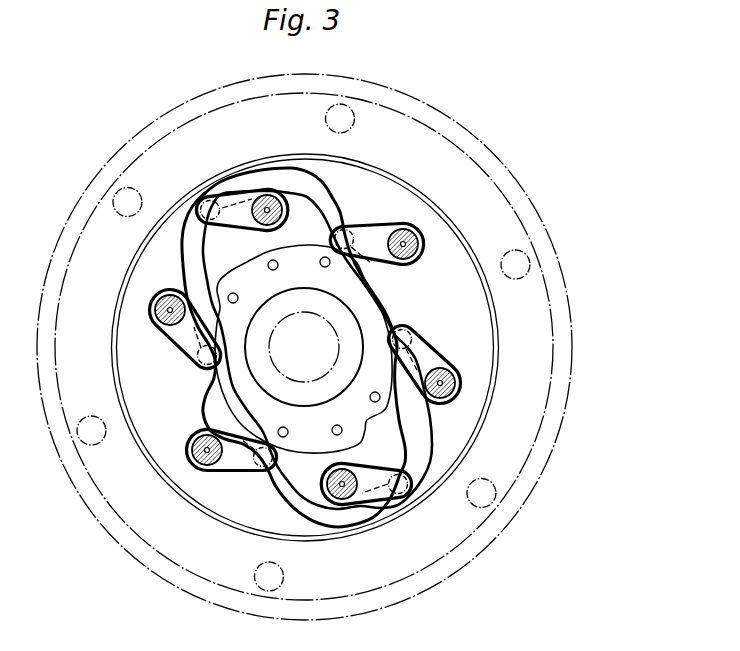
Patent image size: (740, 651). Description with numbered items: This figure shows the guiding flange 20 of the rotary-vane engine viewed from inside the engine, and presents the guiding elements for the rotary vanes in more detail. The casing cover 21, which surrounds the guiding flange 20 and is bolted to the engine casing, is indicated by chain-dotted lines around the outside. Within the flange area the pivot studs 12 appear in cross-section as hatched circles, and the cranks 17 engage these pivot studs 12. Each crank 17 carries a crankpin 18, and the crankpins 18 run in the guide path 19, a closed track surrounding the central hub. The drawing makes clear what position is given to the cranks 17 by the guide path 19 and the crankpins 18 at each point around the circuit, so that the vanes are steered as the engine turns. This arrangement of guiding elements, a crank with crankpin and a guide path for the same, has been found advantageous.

The pivot stud 12 is at (192, 463).
The crank 17 is at (233, 463).
The crankpin 18 is at (257, 477).
The guide path 19 is at (217, 392).
The guiding flange 20 is at (157, 275).
The casing cover 21 is at (153, 163).